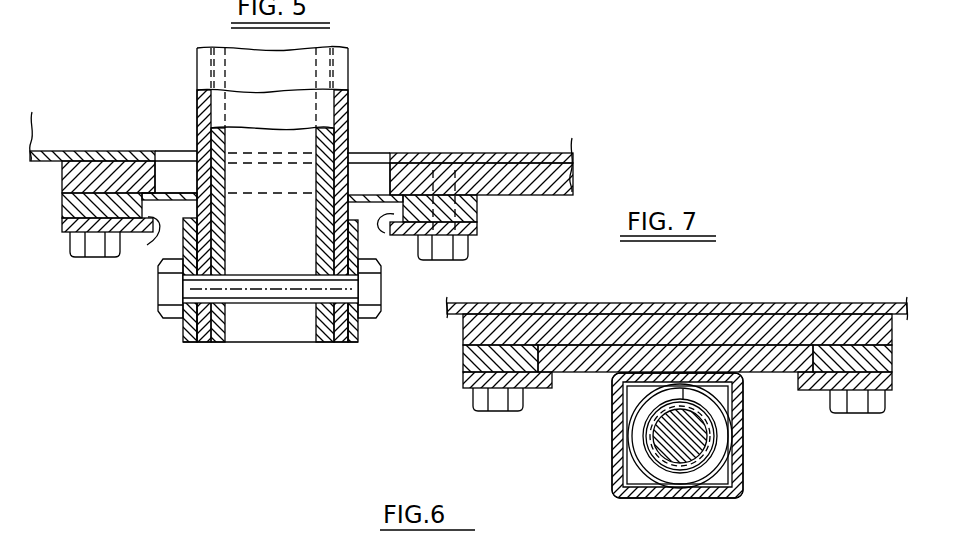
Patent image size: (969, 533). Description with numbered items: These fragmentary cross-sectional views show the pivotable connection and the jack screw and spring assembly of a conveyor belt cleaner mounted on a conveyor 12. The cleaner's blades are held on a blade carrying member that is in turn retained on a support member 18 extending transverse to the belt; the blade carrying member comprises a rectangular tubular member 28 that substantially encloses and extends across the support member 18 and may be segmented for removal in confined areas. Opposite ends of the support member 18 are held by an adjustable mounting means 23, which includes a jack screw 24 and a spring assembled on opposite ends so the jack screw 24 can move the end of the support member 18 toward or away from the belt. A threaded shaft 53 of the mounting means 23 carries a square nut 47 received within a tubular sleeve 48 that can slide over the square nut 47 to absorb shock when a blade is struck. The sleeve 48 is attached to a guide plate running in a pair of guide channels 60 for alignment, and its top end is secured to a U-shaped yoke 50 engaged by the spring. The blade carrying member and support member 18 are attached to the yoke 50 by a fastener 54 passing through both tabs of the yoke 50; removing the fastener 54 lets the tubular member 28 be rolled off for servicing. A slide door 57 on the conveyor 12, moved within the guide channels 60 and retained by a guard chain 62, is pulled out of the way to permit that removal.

In FIG. 7, the conveyor 12 is at (657, 305).
In FIG. 5, the support member 18 is at (222, 250).
In FIG. 7, the adjustable mounting means 23 is at (611, 428).
In FIG. 7, the jack screw 24 is at (641, 452).
In FIG. 5, the rectangular tubular member 28 is at (203, 334).
In FIG. 7, the square nut 47 is at (718, 478).
In FIG. 7, the tubular sleeve 48 is at (672, 496).
In FIG. 5, the U-shaped yoke 50 is at (189, 330).
In FIG. 7, the threaded shaft 53 is at (692, 443).
In FIG. 5, the fastener 54 is at (277, 302).
In FIG. 5, the slide door 57 is at (365, 197).
In FIG. 5, the guide channels 60 is at (259, 243).
In FIG. 5, the guard chain 62 is at (113, 128).